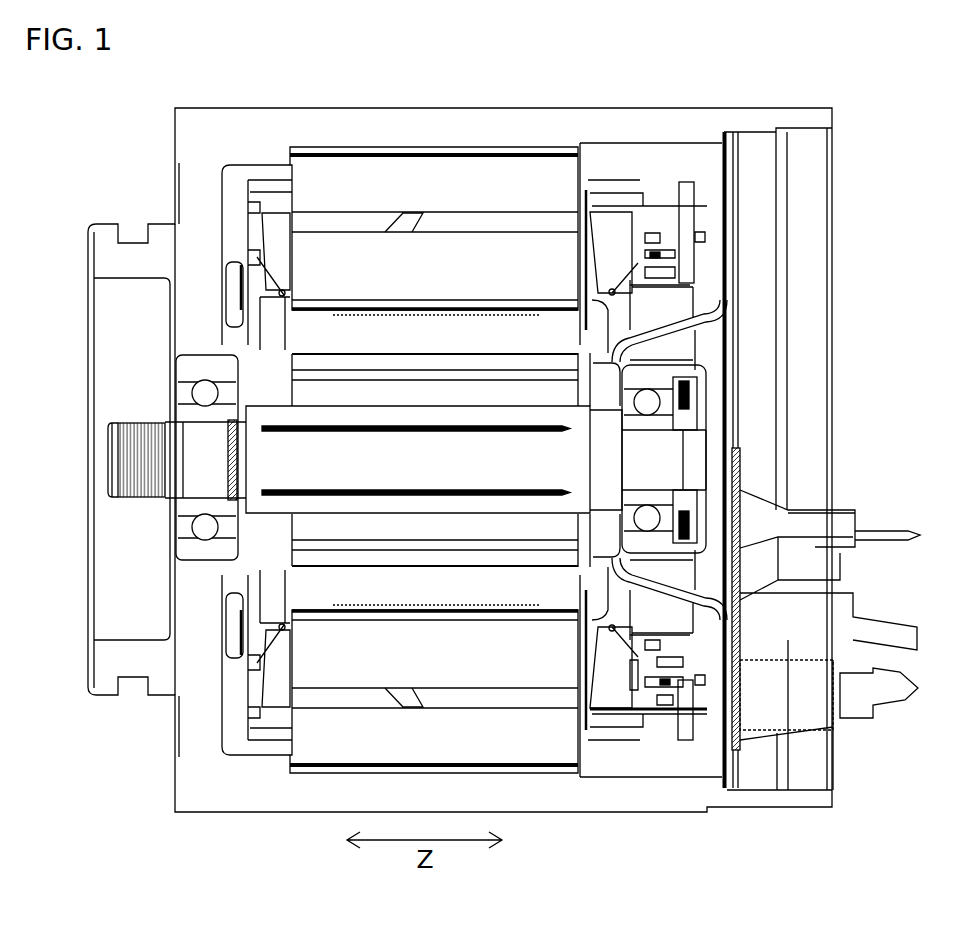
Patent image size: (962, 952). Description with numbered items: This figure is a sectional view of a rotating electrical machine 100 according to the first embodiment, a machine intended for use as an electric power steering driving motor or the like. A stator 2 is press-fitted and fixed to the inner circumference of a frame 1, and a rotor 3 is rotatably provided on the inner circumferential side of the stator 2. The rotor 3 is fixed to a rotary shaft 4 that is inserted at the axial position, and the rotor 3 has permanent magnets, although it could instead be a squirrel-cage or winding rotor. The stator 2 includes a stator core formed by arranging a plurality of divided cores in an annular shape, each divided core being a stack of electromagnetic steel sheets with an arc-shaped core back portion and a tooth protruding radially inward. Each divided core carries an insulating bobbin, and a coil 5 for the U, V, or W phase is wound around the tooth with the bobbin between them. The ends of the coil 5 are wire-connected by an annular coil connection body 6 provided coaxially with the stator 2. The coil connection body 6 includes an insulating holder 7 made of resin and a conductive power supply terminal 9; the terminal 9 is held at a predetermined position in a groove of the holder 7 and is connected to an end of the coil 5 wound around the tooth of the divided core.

The frame 1 is at (283, 107).
The stator 2 is at (480, 173).
The rotor 3 is at (358, 583).
The rotary shaft 4 is at (273, 473).
The coil 5 is at (658, 202).
The coil connection body 6 is at (598, 884).
The holder 7 is at (648, 668).
The terminal 9 is at (686, 707).
The rotating electrical machine 100 is at (862, 112).